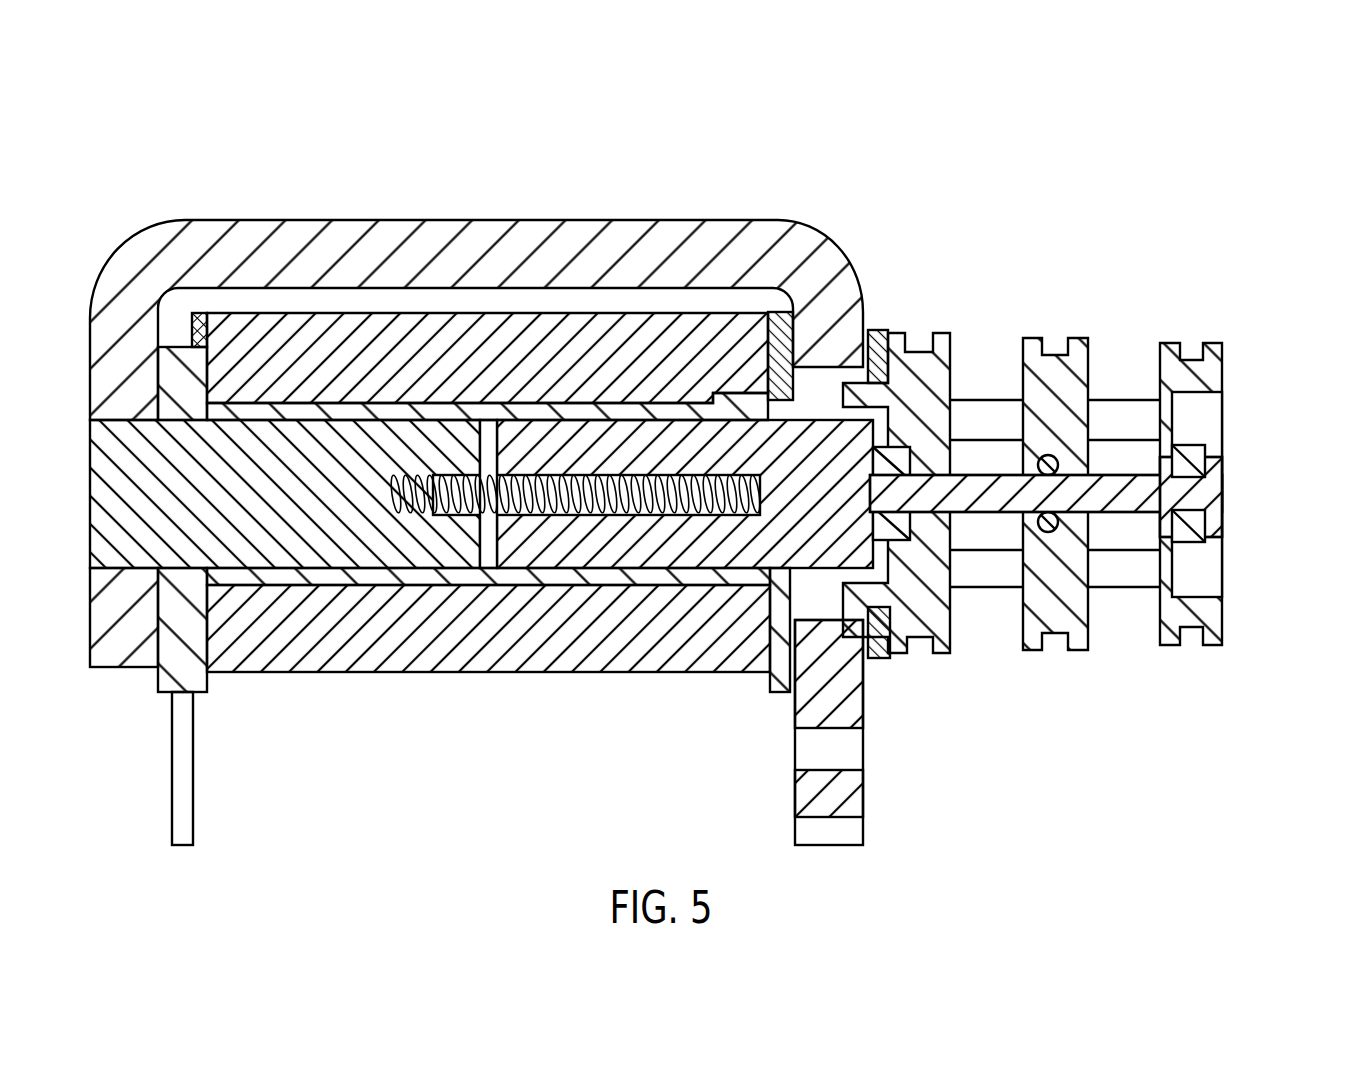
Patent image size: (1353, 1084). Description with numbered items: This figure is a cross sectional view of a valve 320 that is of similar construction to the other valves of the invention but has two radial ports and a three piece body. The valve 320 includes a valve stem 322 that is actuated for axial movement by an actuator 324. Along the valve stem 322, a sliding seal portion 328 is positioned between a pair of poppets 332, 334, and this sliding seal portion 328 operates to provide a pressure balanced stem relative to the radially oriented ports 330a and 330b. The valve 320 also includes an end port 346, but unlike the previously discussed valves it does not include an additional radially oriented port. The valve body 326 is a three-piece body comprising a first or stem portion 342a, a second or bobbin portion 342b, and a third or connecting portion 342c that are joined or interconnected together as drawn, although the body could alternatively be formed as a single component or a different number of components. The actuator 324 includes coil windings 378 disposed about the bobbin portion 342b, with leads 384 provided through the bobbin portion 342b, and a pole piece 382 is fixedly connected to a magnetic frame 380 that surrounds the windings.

The valve 320 is at (538, 152).
The valve stem 322 is at (985, 465).
The actuator 324 is at (468, 683).
The valve body 326 is at (628, 592).
The sliding seal portion 328 is at (1022, 525).
The radially oriented port 330a is at (1110, 590).
The radially oriented port 330b is at (993, 540).
The poppet 332 is at (1162, 512).
The poppet 334 is at (920, 513).
The stem portion 342a is at (1224, 622).
The bobbin portion 342b is at (205, 665).
The connecting portion 342c is at (797, 383).
The end port 346 is at (1200, 420).
The coil windings 378 is at (665, 655).
The magnetic frame 380 is at (597, 250).
The pole piece 382 is at (262, 465).
The leads 384 is at (183, 820).